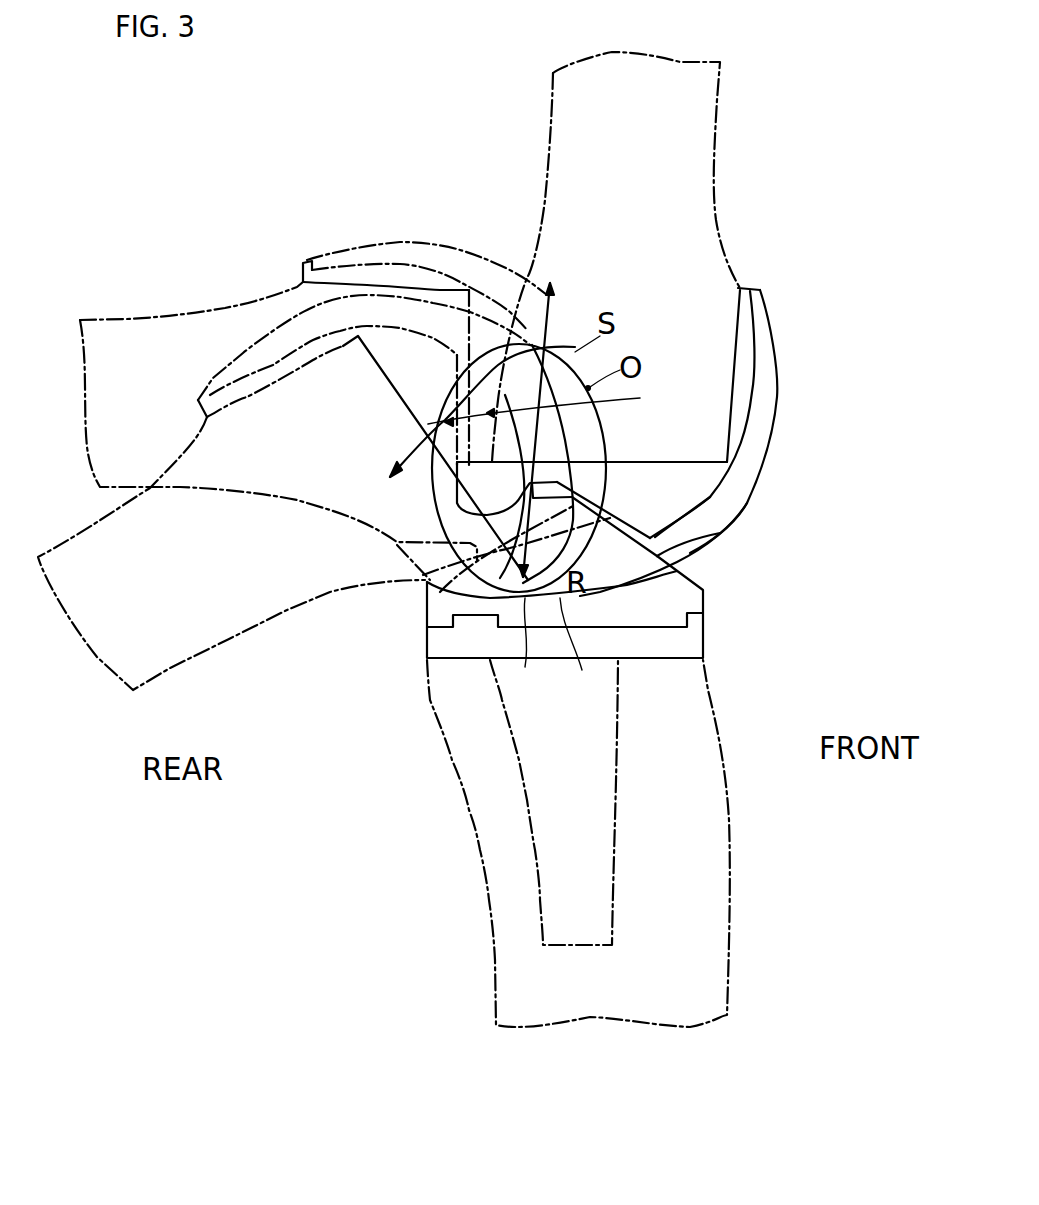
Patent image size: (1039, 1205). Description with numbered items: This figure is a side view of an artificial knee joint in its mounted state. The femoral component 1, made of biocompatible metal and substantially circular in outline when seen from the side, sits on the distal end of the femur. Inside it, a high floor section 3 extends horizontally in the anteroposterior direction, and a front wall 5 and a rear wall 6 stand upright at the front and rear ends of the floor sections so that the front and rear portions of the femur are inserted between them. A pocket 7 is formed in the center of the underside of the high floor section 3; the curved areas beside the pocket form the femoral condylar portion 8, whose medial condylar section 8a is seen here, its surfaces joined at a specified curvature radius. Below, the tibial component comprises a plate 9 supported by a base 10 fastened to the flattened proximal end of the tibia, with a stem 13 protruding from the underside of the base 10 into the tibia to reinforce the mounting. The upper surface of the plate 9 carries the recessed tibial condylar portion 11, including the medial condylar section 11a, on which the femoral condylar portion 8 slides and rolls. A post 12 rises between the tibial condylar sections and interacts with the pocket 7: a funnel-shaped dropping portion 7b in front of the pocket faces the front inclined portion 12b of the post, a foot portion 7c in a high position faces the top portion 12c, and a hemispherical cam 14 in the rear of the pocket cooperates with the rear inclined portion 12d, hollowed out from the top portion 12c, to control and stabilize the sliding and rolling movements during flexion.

The femoral component 1 is at (790, 402).
The high floor section 3 is at (663, 462).
The front wall 5 is at (740, 330).
The rear wall 6 is at (476, 405).
The pocket 7 is at (592, 438).
The dropping portion 7b is at (740, 513).
The foot portion 7c is at (531, 486).
The femoral condylar portion 8 is at (573, 578).
The medial condylar section 8a is at (608, 598).
The plate 9 is at (693, 598).
The base 10 is at (692, 640).
The tibial condylar portion 11 is at (575, 652).
The medial condylar section 11a is at (529, 650).
The post 12 is at (582, 496).
The front inclined portion 12b is at (702, 502).
The top portion 12c is at (590, 443).
The rear inclined portion 12d is at (427, 611).
The stem 13 is at (542, 847).
The cam 14 is at (534, 415).